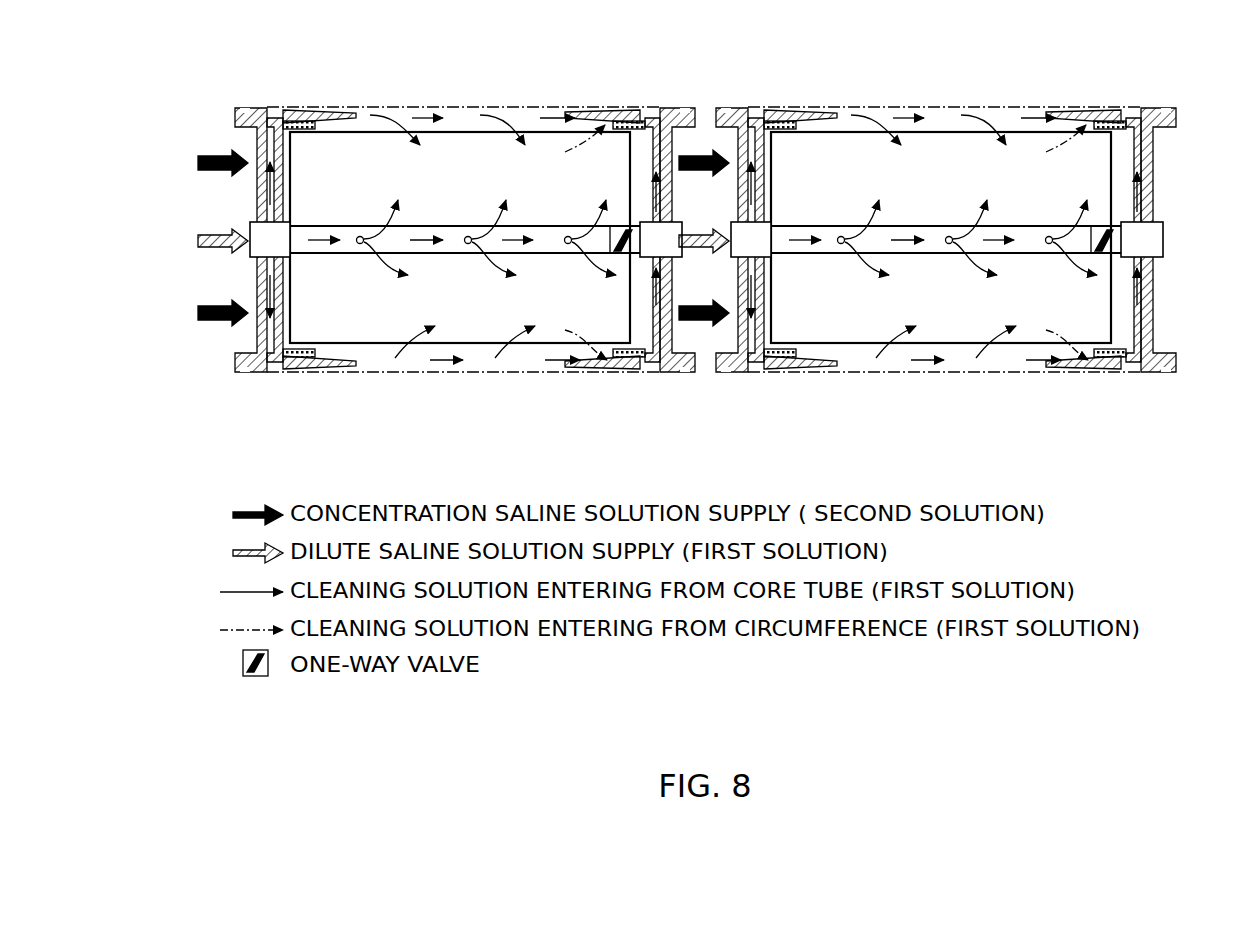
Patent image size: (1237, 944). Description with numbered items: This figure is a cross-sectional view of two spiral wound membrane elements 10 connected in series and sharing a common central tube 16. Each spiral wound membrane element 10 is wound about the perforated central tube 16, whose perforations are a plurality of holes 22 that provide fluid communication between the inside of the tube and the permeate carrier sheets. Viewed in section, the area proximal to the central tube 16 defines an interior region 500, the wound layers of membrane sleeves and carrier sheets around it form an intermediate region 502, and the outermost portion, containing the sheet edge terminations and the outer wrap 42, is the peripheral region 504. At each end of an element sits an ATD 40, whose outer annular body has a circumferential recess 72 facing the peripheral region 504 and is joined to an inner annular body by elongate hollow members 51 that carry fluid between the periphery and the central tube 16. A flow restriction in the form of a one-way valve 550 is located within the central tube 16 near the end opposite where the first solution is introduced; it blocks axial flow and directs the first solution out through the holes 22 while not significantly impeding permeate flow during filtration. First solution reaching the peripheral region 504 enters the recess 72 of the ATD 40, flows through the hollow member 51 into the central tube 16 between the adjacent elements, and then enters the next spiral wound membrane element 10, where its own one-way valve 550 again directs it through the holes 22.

The spiral wound membrane element 10 is at (657, 244).
The central tube 16 is at (549, 224).
The holes 22 is at (468, 236).
The ATD 40 is at (240, 112).
The outer wrap 42 is at (563, 110).
The elongate hollow member 51 is at (262, 213).
The recess 72 is at (291, 120).
The interior region 500 is at (544, 244).
The intermediate region 502 is at (365, 152).
The peripheral region 504 is at (500, 117).
The one-way valve 550 is at (624, 254).